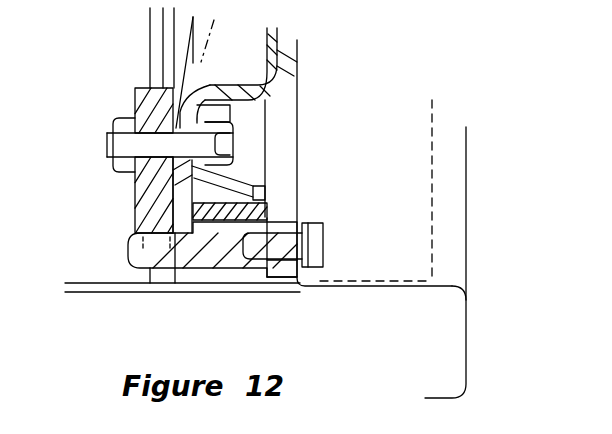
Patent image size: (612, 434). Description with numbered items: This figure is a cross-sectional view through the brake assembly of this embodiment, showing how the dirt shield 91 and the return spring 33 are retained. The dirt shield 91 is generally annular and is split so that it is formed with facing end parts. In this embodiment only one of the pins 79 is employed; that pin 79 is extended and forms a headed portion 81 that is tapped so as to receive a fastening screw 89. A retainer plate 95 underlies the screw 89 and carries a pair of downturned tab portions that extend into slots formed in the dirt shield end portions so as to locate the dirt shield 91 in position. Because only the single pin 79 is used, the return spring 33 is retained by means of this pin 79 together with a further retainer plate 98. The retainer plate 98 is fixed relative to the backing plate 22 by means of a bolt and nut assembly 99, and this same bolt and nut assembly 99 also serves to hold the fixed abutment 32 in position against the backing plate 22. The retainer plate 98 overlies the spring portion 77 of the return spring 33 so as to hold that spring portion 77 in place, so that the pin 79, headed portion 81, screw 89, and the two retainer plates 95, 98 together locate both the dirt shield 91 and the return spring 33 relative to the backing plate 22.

The backing plate 22 is at (220, 85).
The fixed abutment 32 is at (136, 89).
The return spring 33 is at (262, 197).
The spring portion 77 is at (127, 220).
The pin 79 is at (223, 253).
The headed portion 81 is at (282, 272).
The fastening screw 89 is at (325, 250).
The dirt shield 91 is at (467, 340).
The retainer plate 95 is at (302, 232).
The retainer plate 98 is at (233, 180).
The bolt and nut assembly 99 is at (118, 143).